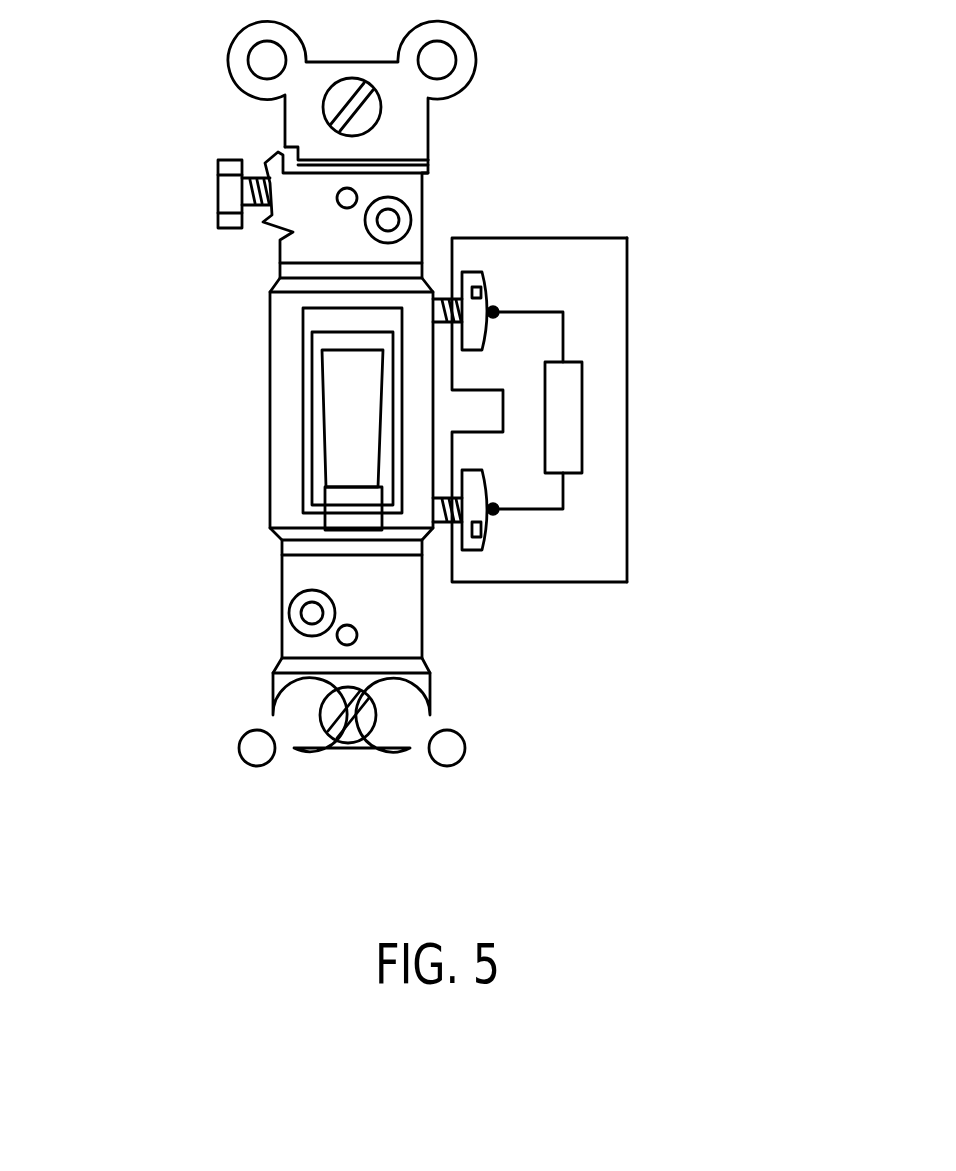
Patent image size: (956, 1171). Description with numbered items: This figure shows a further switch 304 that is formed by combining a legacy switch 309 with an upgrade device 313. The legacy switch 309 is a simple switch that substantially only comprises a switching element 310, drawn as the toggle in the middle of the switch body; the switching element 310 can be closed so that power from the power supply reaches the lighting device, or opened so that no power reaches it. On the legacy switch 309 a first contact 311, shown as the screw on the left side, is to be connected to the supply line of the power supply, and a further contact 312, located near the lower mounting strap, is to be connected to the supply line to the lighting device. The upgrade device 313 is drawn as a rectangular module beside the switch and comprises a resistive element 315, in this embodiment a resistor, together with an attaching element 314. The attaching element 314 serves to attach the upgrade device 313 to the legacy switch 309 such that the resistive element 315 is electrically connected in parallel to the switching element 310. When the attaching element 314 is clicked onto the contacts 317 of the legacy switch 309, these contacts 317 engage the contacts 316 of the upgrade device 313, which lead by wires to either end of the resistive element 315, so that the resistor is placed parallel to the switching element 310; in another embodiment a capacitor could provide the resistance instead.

The further switch 304 is at (680, 330).
The legacy switch 309 is at (212, 781).
The switching element 310 is at (305, 443).
The first contact 311 is at (205, 200).
The further contact 312 is at (372, 752).
The upgrade device 313 is at (605, 225).
The attaching element 314 is at (627, 505).
The resistive element 315 is at (582, 407).
The contacts 316 is at (494, 308).
The contacts 317 is at (472, 272).